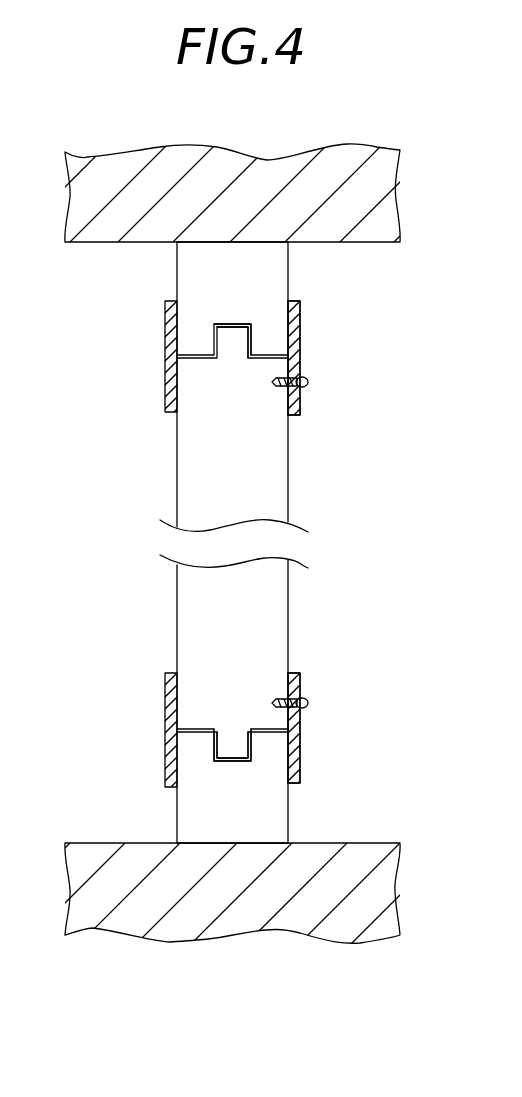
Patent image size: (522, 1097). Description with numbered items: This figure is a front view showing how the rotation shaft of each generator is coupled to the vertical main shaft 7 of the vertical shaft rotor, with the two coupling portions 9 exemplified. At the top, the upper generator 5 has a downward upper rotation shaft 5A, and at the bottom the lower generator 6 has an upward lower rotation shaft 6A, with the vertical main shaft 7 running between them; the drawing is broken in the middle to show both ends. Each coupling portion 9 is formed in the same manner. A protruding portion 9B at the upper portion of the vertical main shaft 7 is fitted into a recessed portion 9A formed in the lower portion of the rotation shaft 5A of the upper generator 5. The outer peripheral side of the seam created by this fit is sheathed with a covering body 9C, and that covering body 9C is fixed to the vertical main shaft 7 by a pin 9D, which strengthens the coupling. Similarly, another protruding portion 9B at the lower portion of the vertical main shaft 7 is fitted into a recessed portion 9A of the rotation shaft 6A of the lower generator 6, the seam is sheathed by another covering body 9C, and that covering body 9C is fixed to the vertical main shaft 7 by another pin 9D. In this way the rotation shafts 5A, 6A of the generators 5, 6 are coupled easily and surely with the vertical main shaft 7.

The upper generator 5 is at (87, 243).
The upper rotation shaft 5A is at (177, 290).
The lower generator 6 is at (88, 843).
The lower rotation shaft 6A is at (177, 805).
The vertical main shaft 7 is at (288, 470).
The coupling portion 9 is at (158, 336).
The recessed portion 9A is at (237, 325).
The protruding portion 9B is at (237, 325).
The covering body 9C is at (297, 323).
The pin 9D is at (308, 381).